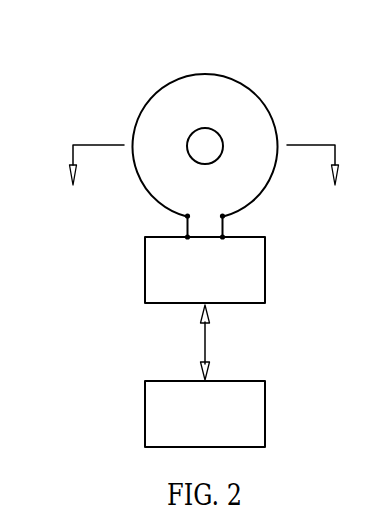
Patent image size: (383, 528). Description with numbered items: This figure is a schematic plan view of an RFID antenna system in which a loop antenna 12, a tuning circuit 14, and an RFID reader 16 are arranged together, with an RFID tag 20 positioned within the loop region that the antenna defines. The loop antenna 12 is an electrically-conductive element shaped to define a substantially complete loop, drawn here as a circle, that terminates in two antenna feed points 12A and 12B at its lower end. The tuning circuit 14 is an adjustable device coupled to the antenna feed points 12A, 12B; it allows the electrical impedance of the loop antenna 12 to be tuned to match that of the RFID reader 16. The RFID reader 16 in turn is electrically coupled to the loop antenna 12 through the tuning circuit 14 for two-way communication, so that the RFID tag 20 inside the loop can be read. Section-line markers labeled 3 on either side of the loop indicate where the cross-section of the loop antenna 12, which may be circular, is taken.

The loop antenna 12 is at (277, 138).
The antenna feed point 12A is at (186, 215).
The antenna feed point 12B is at (224, 215).
The tuning circuit 14 is at (265, 267).
The RFID reader 16 is at (265, 400).
The RFID tag 20 is at (205, 128).
The section line for FIG. 3 is at (205, 178).